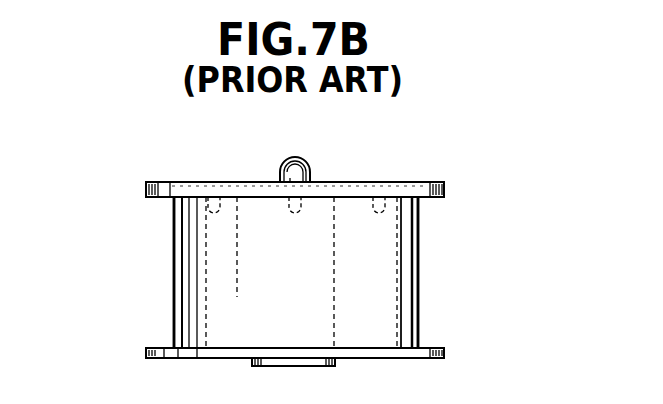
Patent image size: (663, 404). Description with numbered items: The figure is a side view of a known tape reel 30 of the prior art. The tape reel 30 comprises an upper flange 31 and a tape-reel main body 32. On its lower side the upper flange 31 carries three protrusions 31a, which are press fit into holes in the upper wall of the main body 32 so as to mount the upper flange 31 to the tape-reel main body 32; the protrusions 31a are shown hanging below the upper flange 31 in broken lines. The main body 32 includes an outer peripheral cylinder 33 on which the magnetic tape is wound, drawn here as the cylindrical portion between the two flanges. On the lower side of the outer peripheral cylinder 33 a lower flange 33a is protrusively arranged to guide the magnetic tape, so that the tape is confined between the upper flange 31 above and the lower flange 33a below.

The tape reel 30 is at (523, 173).
The upper flange 31 is at (445, 192).
The protrusions 31a is at (130, 231).
The main body 32 is at (420, 242).
The outer peripheral cylinder 33 is at (400, 288).
The lower flange 33a is at (446, 349).